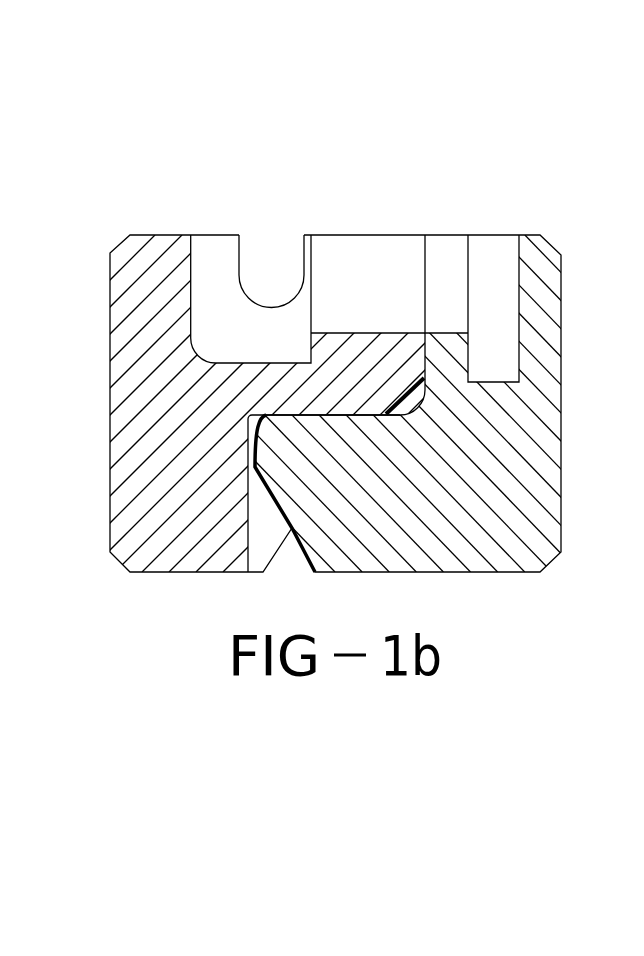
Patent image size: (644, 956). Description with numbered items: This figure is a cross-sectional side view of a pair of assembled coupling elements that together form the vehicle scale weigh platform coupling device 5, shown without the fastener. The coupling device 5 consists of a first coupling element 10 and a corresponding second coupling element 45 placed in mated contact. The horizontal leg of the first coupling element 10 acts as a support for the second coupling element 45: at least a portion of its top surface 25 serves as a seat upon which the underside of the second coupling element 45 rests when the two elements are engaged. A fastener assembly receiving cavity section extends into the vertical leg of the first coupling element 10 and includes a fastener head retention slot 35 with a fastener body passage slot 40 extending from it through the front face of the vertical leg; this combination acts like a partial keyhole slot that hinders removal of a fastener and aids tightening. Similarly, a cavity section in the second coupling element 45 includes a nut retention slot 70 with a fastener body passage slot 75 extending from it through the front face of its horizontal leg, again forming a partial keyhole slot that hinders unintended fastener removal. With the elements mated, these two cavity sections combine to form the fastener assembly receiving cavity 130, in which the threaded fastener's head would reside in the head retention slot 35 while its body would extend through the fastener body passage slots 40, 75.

The vehicle scale weigh platform coupling device 5 is at (118, 158).
The first coupling element 10 is at (577, 387).
The top surface 25 is at (352, 415).
The fastener head retention slot 35 is at (492, 248).
The fastener body passage slot 40 is at (447, 248).
The second coupling element 45 is at (100, 387).
The nut retention slot 70 is at (207, 257).
The fastener body passage slot 75 is at (337, 262).
The fastener assembly receiving cavity 130 is at (393, 225).